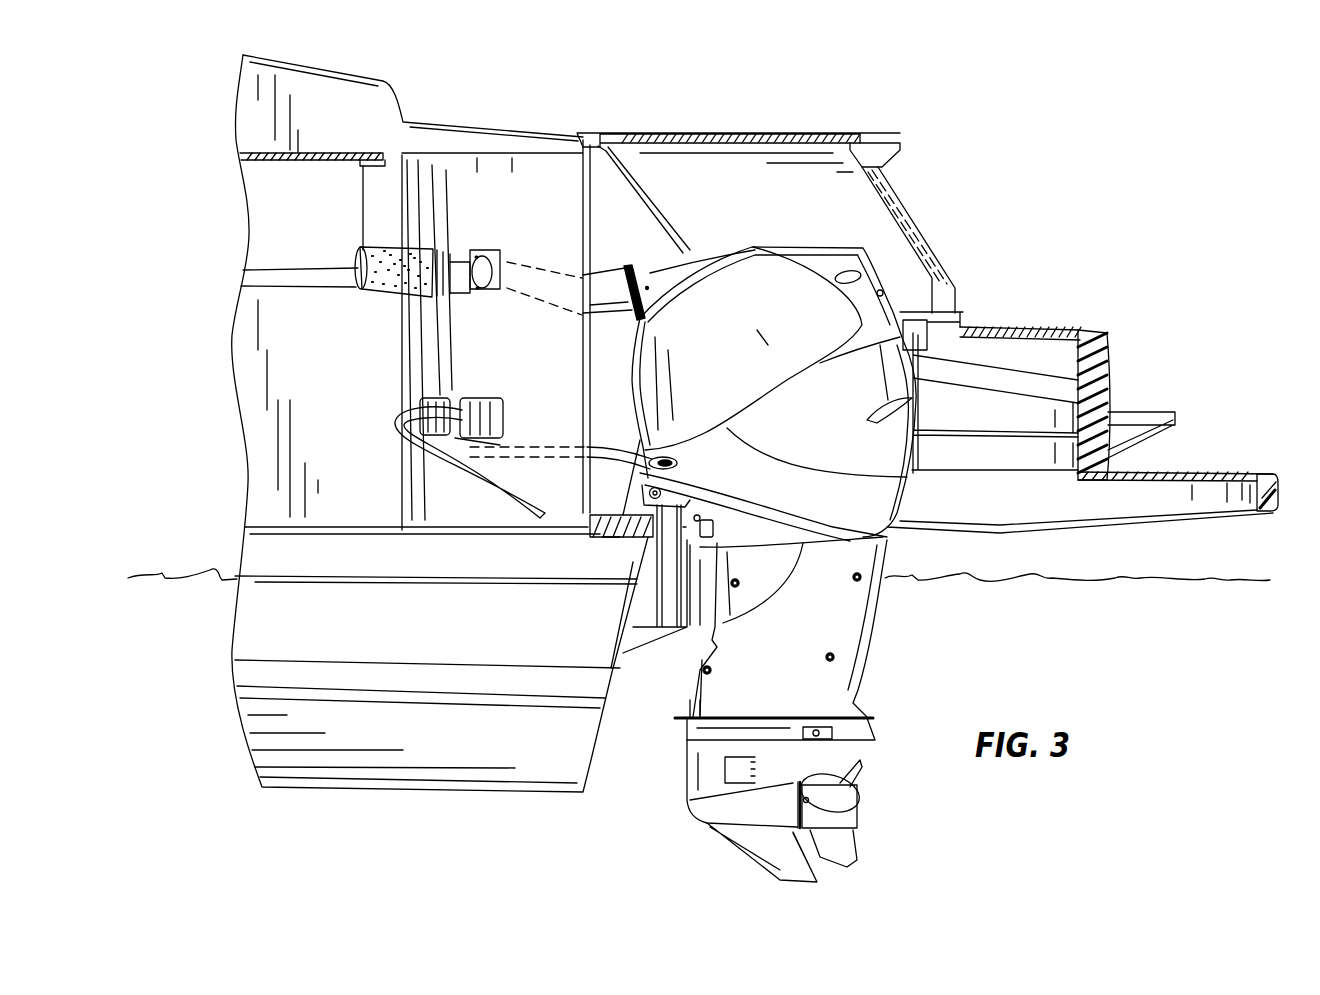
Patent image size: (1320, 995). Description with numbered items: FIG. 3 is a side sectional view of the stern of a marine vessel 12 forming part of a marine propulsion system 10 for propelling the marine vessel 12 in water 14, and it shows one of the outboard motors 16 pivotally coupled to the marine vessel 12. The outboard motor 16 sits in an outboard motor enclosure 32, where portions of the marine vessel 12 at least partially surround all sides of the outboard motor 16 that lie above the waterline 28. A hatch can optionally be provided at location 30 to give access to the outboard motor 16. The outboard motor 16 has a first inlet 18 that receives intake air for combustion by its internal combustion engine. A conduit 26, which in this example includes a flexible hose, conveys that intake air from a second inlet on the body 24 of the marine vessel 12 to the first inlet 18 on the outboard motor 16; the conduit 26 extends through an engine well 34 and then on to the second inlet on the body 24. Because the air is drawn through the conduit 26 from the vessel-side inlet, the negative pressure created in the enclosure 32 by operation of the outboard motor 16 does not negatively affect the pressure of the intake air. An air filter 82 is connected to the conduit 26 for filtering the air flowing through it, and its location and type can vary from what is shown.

The marine propulsion system 10 is at (1069, 170).
The marine vessel 12 is at (248, 628).
The water 14 is at (1182, 658).
The outboard motor 16 is at (843, 600).
The first inlet 18 is at (644, 285).
The body 24 is at (257, 379).
The conduit 26 is at (606, 288).
The waterline 28 is at (1225, 569).
The location 30 is at (941, 254).
The outboard motor enclosure 32 is at (997, 446).
The engine well 34 is at (500, 178).
The air filter 82 is at (385, 247).